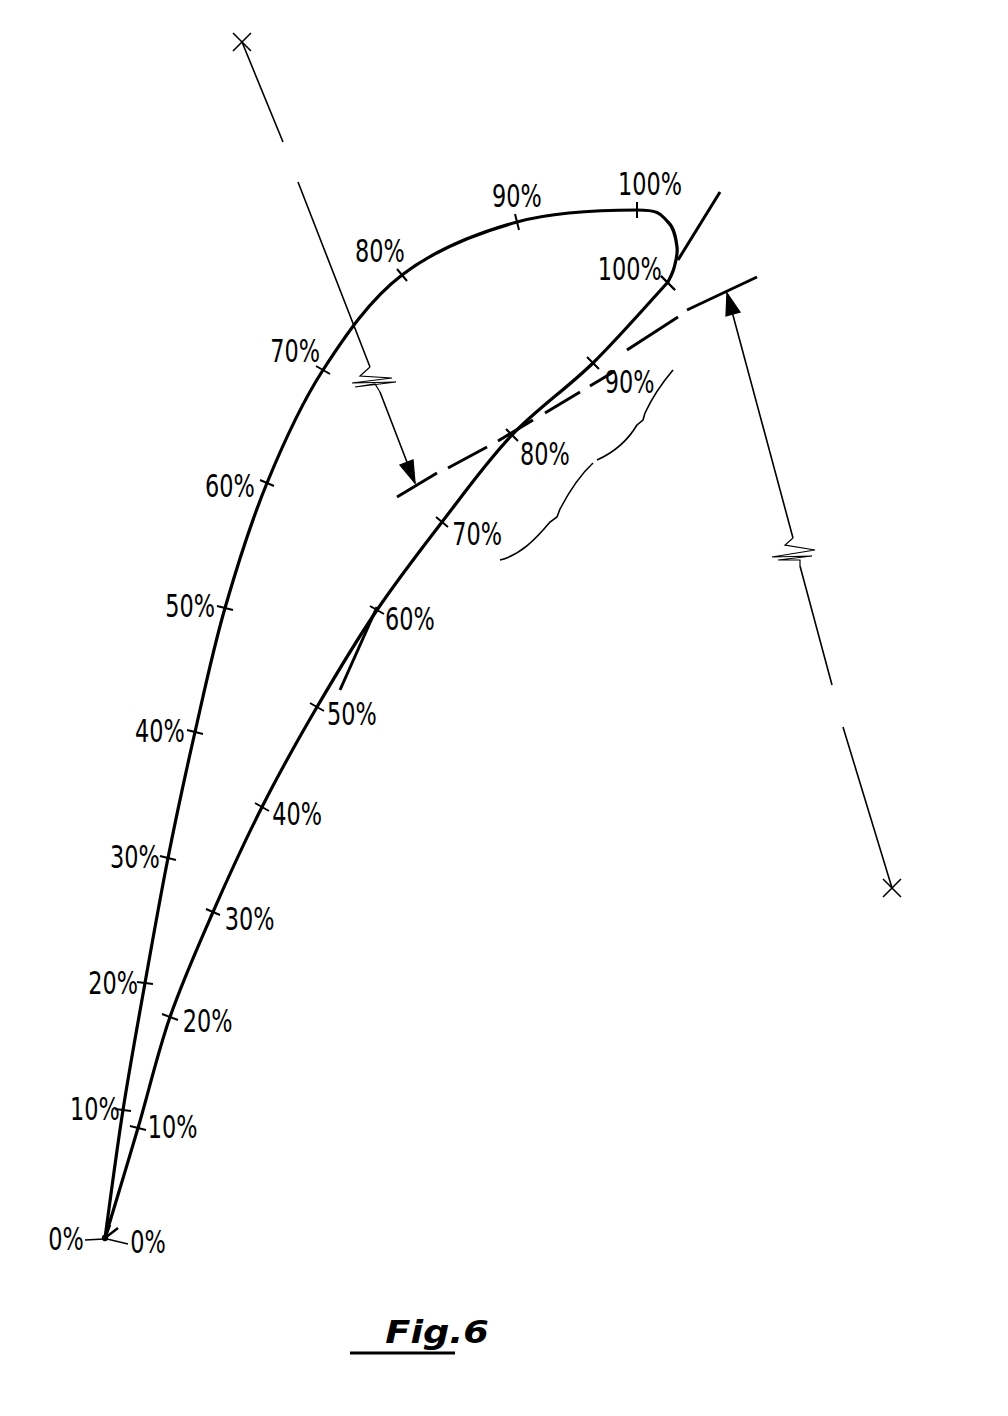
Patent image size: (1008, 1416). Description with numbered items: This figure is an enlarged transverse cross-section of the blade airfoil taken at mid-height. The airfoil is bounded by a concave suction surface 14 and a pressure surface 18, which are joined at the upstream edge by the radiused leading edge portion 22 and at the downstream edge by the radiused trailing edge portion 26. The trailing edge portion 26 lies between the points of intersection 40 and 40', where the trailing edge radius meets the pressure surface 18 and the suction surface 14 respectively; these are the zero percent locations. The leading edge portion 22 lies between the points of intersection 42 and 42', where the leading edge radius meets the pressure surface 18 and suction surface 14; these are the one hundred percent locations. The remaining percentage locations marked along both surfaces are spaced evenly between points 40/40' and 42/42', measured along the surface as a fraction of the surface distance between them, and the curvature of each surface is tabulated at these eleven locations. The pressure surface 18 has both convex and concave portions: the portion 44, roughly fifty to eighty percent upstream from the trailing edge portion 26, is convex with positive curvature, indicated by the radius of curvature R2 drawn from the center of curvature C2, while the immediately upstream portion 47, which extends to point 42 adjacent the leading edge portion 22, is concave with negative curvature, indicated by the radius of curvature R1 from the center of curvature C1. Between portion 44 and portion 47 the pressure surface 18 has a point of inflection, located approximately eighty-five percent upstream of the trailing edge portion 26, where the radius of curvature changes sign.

The suction surface 14 is at (212, 405).
The pressure surface 18 is at (412, 567).
The leading edge portion 22 is at (676, 238).
The trailing edge portion 26 is at (103, 1246).
The point of intersection 40 is at (136, 1274).
The point of intersection 40' is at (70, 1202).
The point of intersection 42 is at (712, 262).
The point of intersection 42' is at (687, 178).
The downstream adjacent portion 44 is at (546, 511).
The portion of the pressure surface adjacent the leading edge portion 47 is at (638, 415).
The center of curvature C1 is at (248, 40).
The radius of curvature R1 is at (328, 262).
The center of curvature C2 is at (822, 917).
The radius of curvature R2 is at (809, 590).